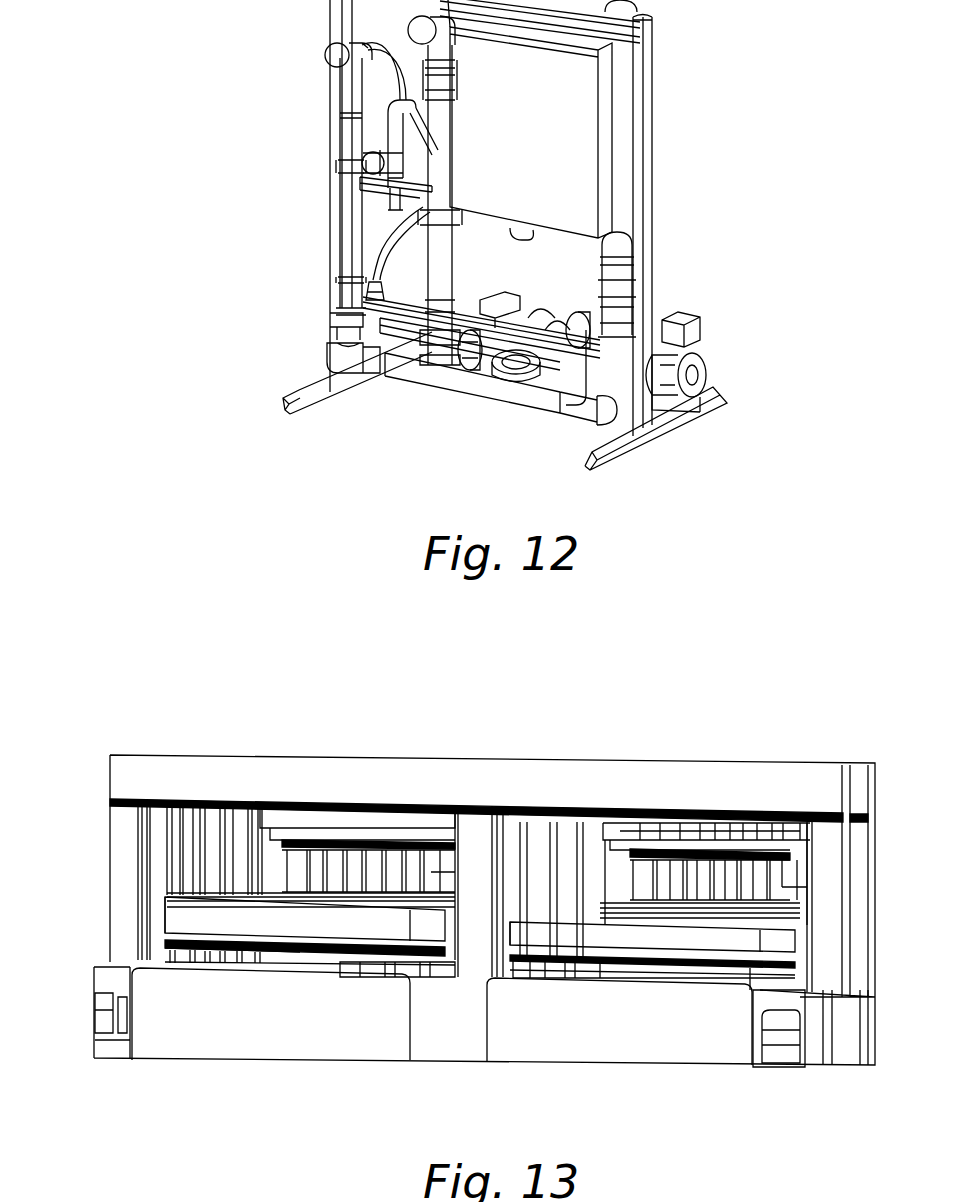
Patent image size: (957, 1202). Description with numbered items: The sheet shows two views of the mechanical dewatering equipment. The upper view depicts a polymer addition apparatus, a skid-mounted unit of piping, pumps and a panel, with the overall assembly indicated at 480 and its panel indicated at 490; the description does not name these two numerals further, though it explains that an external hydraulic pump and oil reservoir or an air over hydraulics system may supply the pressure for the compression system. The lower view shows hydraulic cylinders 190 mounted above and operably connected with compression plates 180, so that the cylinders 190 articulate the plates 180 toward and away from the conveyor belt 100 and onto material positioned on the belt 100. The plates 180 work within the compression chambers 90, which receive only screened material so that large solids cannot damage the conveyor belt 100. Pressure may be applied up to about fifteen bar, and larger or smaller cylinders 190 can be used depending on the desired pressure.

In FIG. 12, the pump assembly 480 is at (728, 333).
In FIG. 12, the control panel 490 is at (542, 118).
In FIG. 13, the hydraulic cylinder 190 is at (662, 837).
In FIG. 13, the compression plate 180 is at (778, 1093).
In FIG. 13, the conveyor belt 100 is at (663, 1095).
In FIG. 13, the compression chamber 90 is at (285, 948).